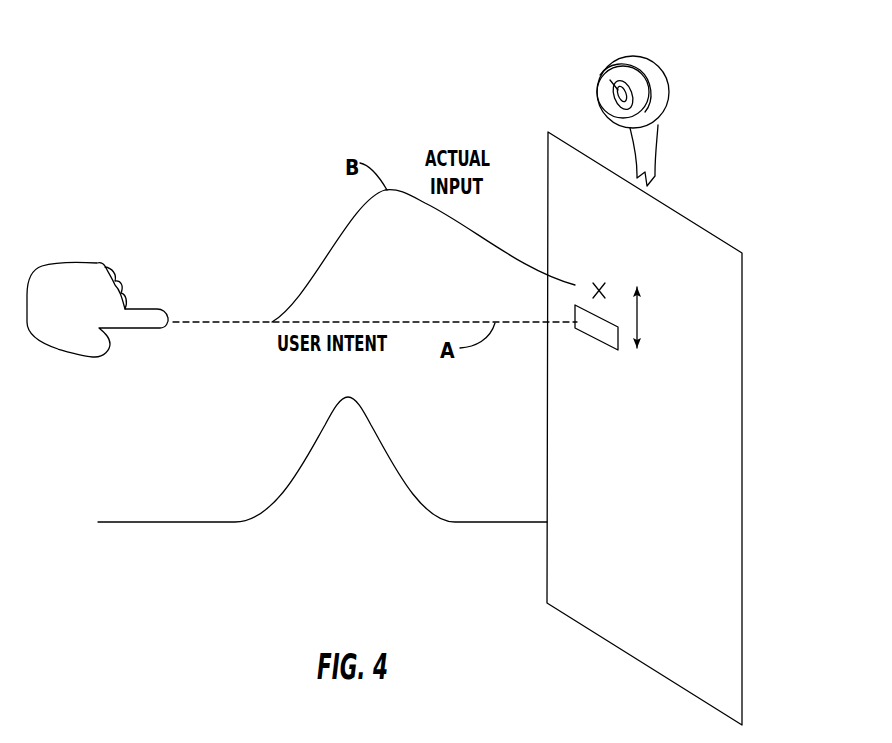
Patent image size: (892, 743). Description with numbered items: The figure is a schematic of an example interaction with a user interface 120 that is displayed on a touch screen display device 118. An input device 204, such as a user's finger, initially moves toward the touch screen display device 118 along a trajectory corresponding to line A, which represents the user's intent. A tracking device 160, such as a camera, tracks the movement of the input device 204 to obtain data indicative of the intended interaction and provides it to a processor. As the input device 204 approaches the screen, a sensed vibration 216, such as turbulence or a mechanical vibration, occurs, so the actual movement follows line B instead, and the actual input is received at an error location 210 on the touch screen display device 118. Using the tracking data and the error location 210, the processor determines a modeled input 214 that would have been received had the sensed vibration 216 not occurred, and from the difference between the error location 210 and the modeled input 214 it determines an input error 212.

The touch screen display device 118 is at (763, 128).
The user interface 120 is at (720, 568).
The tracking device 160 is at (658, 68).
The input device 204 is at (97, 253).
The error location 210 is at (607, 286).
The input error 212 is at (645, 310).
The modeled input 214 is at (622, 353).
The sensed vibration 216 is at (205, 524).